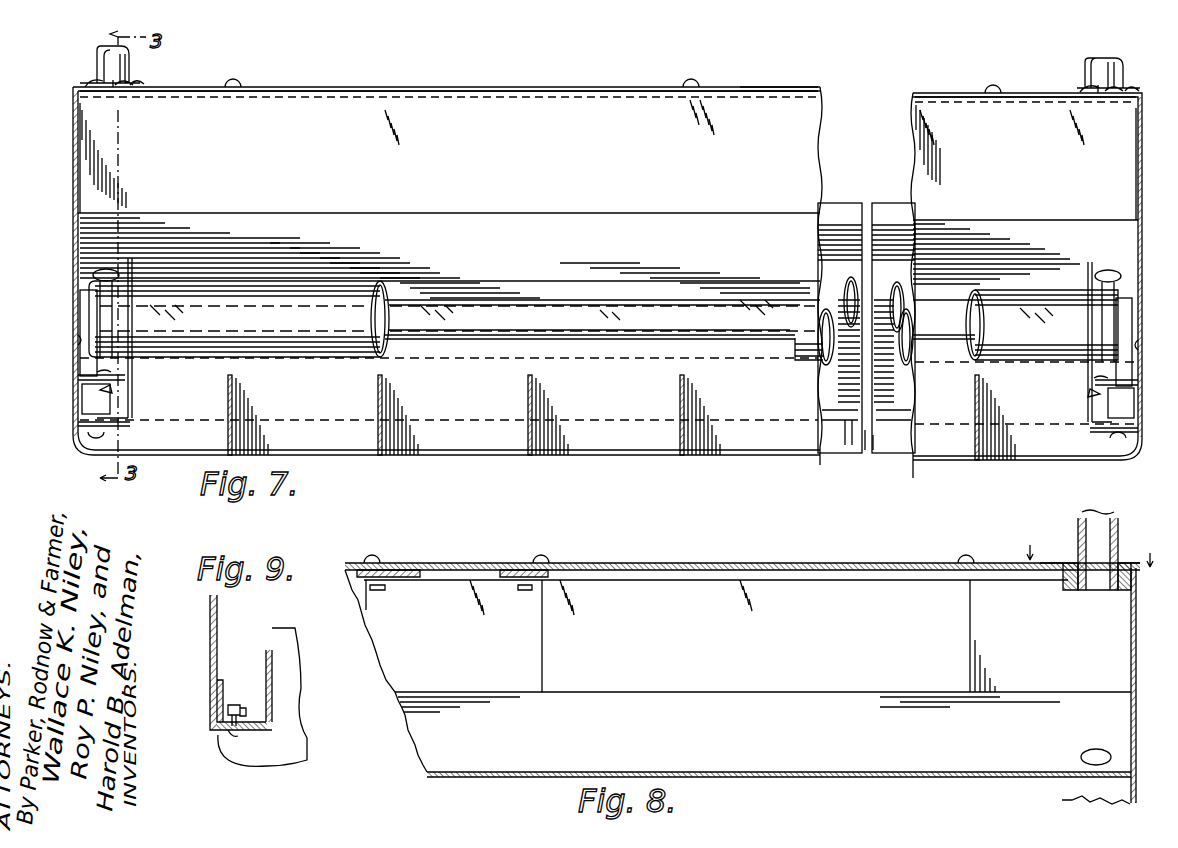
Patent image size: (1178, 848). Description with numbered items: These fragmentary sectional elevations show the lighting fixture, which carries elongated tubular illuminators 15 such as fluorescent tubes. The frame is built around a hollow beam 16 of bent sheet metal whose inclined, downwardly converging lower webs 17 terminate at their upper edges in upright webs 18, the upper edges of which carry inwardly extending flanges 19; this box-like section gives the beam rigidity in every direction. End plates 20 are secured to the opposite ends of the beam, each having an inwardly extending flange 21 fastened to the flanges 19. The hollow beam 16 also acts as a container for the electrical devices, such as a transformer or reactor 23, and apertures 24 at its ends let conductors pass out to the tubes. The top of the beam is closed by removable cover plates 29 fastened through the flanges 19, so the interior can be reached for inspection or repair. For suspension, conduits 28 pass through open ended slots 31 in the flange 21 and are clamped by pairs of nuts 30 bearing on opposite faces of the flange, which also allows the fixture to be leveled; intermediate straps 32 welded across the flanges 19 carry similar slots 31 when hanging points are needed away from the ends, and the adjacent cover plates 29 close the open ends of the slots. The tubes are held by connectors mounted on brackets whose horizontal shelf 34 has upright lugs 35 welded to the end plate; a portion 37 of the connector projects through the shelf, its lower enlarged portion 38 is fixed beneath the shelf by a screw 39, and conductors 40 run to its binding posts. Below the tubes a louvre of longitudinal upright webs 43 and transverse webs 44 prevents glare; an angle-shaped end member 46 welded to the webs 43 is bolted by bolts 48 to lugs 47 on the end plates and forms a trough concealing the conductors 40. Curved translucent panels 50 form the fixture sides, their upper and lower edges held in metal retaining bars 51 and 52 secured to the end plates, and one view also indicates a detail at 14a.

In FIG. 8, the container wall thickness dimension 14a is at (1093, 562).
In FIG. 7, the tubular illuminator 15 is at (832, 290).
In FIG. 7, the hollow beam 16 is at (608, 160).
In FIG. 7, the lower web 17 is at (580, 258).
In FIG. 8, the lower web 17 is at (729, 725).
In FIG. 7, the upright web 18 is at (610, 90).
In FIG. 8, the upright web 18 is at (468, 636).
In FIG. 7, the flange 19 is at (778, 100).
In FIG. 8, the flange 19 is at (414, 580).
In FIG. 7, the end plate 20 is at (73, 163).
In FIG. 8, the end plate 20 is at (1131, 661).
In FIG. 9, the end plate 20 is at (210, 636).
In FIG. 7, the flange 21 is at (113, 90).
In FIG. 8, the flange 21 is at (1133, 566).
In FIG. 8, the transformer or reactor 23 is at (836, 636).
In FIG. 7, the aperture 24 is at (110, 262).
In FIG. 8, the aperture 24 is at (1083, 755).
In FIG. 7, the conduit 28 is at (97, 58).
In FIG. 8, the conduit 28 is at (1088, 514).
In FIG. 7, the cover plate 29 is at (514, 88).
In FIG. 8, the cover plate 29 is at (402, 565).
In FIG. 7, the nut 30 is at (140, 84).
In FIG. 8, the nut 30 is at (1070, 590).
In FIG. 8, the slot 31 is at (450, 562).
In FIG. 7, the strap 32 is at (756, 88).
In FIG. 8, the strap 32 is at (478, 563).
In FIG. 7, the shelf 34 is at (78, 385).
In FIG. 7, the lug 35 is at (80, 340).
In FIG. 7, the socket portion 37 is at (85, 302).
In FIG. 7, the enlarged portion 38 is at (82, 398).
In FIG. 7, the screw 39 is at (112, 376).
In FIG. 7, the conductor 40 is at (112, 393).
In FIG. 7, the longitudinal web 43 is at (925, 378).
In FIG. 9, the longitudinal web 43 is at (290, 732).
In FIG. 7, the transverse web 44 is at (528, 383).
In FIG. 7, the angle-shaped end member 46 is at (135, 407).
In FIG. 9, the angle-shaped end member 46 is at (272, 665).
In FIG. 7, the lug 47 is at (82, 422).
In FIG. 9, the lug 47 is at (223, 690).
In FIG. 7, the bolt 48 is at (96, 440).
In FIG. 9, the bolt 48 is at (226, 740).
In FIG. 7, the translucent panel 50 is at (852, 398).
In FIG. 7, the retaining bar 51 is at (845, 210).
In FIG. 7, the retaining bar 52 is at (859, 443).